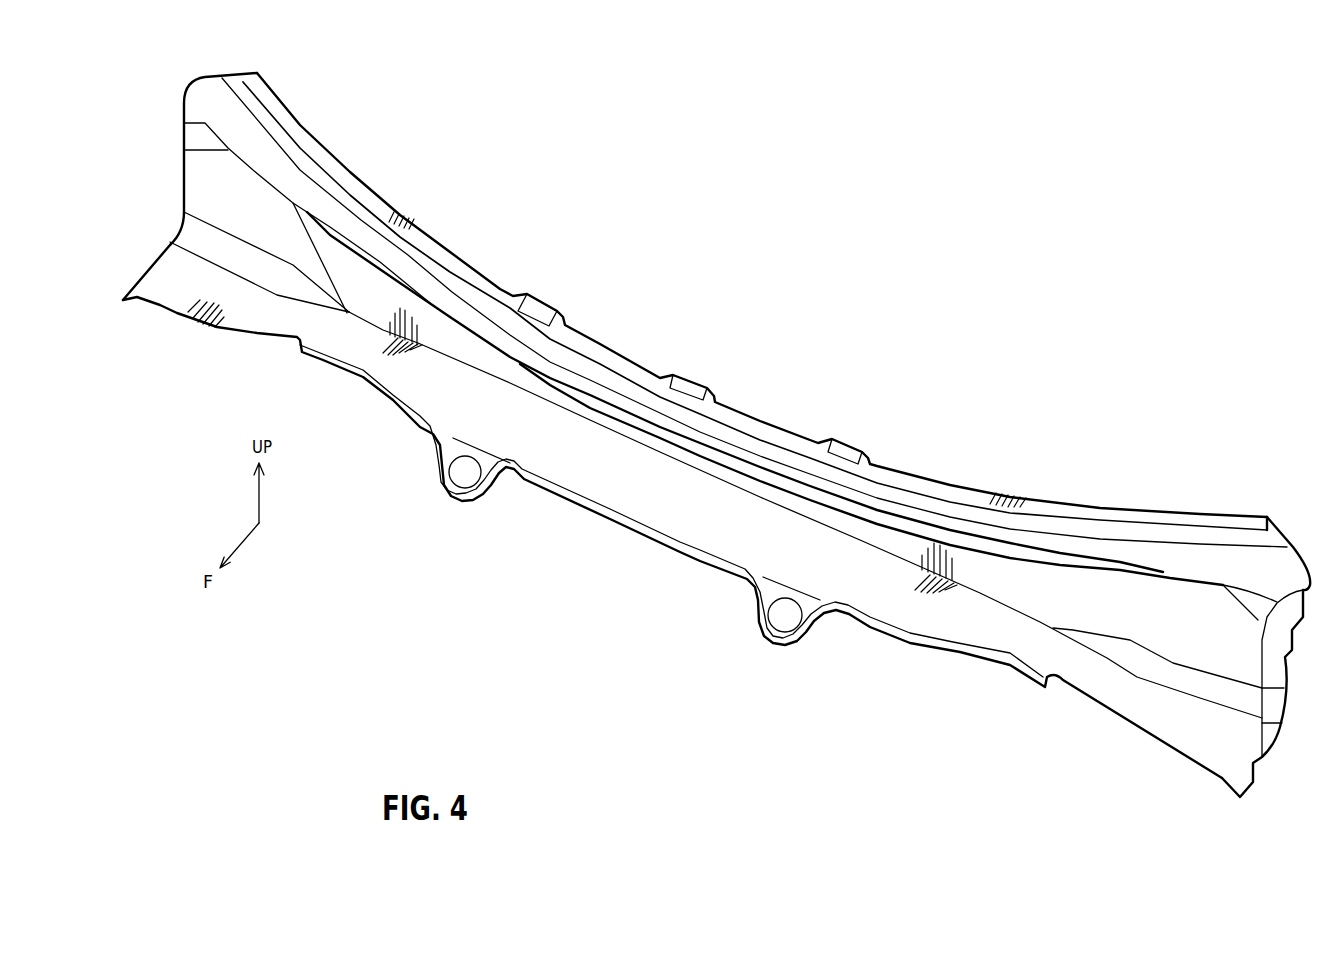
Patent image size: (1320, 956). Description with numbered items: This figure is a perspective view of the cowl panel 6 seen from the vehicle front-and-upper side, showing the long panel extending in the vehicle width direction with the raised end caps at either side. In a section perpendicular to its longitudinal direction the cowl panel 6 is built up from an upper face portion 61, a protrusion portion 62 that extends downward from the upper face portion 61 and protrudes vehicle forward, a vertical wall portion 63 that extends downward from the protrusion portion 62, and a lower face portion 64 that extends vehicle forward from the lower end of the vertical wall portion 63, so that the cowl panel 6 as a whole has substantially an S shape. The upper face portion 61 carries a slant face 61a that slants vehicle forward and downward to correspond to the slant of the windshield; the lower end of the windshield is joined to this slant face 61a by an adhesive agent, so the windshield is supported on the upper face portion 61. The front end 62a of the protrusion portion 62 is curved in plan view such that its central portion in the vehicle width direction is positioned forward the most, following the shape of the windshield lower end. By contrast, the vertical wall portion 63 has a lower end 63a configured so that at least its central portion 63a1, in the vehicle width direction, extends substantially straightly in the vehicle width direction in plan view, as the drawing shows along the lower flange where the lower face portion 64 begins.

The cowl panel 6 is at (648, 633).
The upper face portion 61 is at (747, 413).
The slant face 61a is at (763, 447).
The protrusion portion 62 is at (627, 420).
The front end 62a is at (580, 388).
The vertical wall portion 63 is at (1038, 593).
The lower end 63a is at (1105, 658).
The central portion 63a1 is at (690, 465).
The lower face portion 64 is at (893, 608).